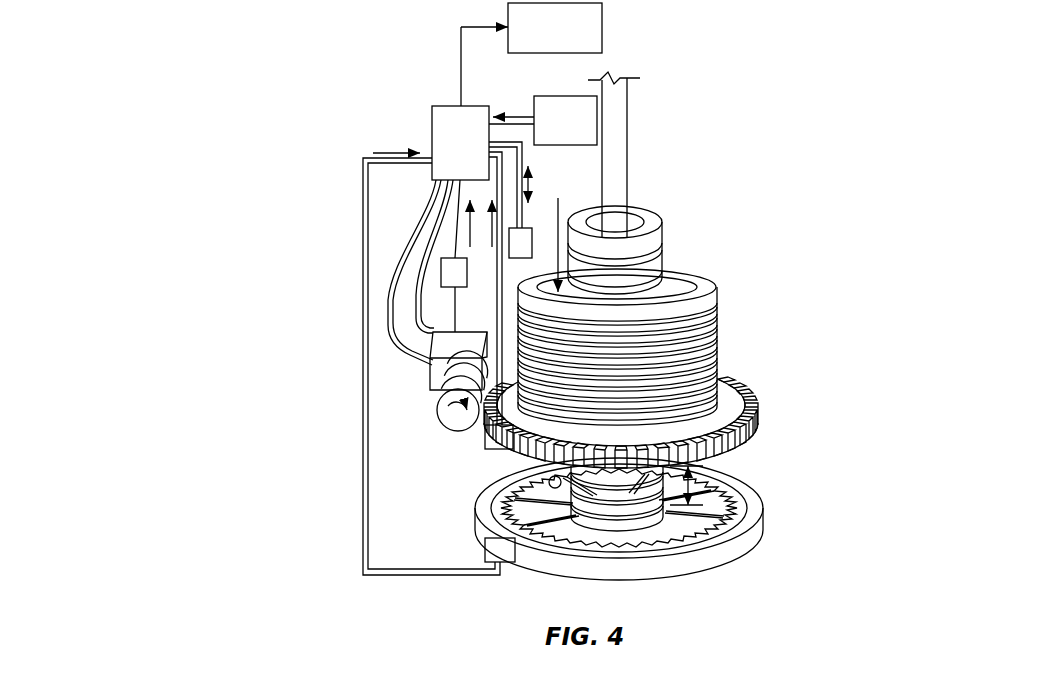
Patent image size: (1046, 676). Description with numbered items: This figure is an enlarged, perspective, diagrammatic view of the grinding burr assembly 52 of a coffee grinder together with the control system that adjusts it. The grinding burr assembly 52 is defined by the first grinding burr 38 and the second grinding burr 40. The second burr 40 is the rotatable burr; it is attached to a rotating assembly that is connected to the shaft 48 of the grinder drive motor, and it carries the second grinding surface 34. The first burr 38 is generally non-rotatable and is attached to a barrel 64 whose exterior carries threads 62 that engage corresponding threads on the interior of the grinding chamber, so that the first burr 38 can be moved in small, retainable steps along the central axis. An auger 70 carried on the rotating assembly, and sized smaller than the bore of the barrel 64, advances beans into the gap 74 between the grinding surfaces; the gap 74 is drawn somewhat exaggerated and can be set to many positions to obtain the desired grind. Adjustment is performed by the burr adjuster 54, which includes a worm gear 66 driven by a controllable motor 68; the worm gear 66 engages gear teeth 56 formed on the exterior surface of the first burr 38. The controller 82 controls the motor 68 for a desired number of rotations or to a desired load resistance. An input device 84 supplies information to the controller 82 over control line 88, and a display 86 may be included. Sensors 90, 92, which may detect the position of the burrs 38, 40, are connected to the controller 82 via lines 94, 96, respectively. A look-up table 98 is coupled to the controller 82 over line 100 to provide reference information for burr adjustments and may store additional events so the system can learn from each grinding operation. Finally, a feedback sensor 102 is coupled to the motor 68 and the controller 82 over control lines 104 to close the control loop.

The second grinding surface 34 is at (543, 513).
The first grinding burr 38 is at (732, 400).
The second grinding burr 40 is at (762, 510).
The shaft 48 is at (630, 128).
The grinding burr assembly 52 is at (838, 442).
The burr adjuster 54 is at (423, 388).
The gear teeth 56 is at (476, 159).
The threads 62 is at (713, 338).
The barrel 64 is at (705, 290).
The worm gear 66 is at (453, 425).
The controllable motor 68 is at (470, 342).
The auger 70 is at (657, 228).
The gap 74 is at (693, 490).
The controller 82 is at (418, 118).
The input device 84 is at (580, 135).
The display 86 is at (571, 45).
The control line 88 is at (520, 113).
The sensor 90 is at (498, 552).
The sensor 92 is at (500, 433).
The line 94 is at (363, 367).
The line 96 is at (498, 267).
The look-up table 98 is at (525, 238).
The line 100 is at (527, 150).
The feedback sensor 102 is at (455, 275).
The control lines 104 is at (457, 227).